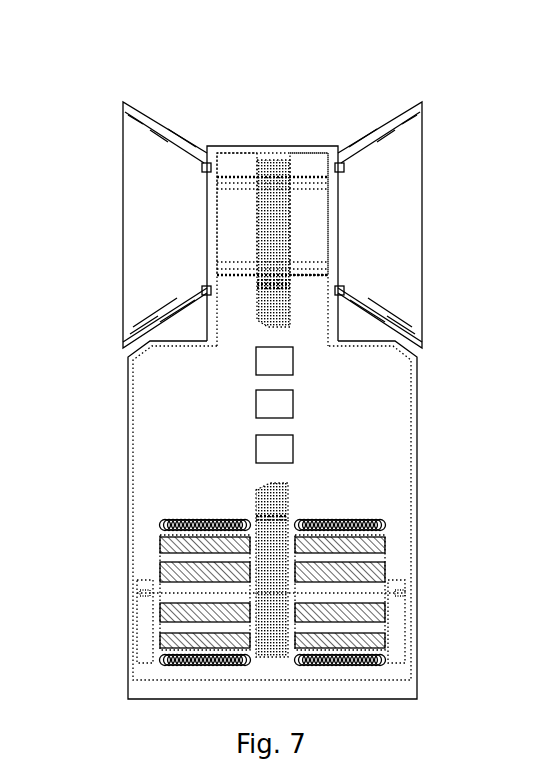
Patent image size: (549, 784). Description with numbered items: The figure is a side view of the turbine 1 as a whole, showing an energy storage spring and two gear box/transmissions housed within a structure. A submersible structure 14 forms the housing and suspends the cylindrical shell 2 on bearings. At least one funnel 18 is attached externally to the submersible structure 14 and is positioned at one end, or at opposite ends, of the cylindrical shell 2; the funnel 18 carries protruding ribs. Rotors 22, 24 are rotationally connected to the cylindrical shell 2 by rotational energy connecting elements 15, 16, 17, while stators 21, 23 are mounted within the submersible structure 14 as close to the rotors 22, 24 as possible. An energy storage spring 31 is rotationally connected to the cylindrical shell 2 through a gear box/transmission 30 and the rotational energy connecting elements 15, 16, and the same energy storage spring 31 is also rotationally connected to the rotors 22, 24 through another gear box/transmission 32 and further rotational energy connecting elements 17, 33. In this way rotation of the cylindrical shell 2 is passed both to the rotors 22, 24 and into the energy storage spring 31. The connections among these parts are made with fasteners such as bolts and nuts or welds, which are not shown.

The apparatus 1 is at (98, 82).
The cylindrical shell 2 is at (245, 235).
The submersible structure 14 is at (417, 383).
The rotational energy connecting element 15 is at (286, 225).
The rotational energy connecting element 16 is at (286, 321).
The rotational energy connecting element 17 is at (284, 575).
The funnel 18 is at (172, 195).
The stator 21 is at (158, 528).
The rotor 22 is at (213, 575).
The stator 23 is at (384, 528).
The rotor 24 is at (351, 575).
The gear box/transmission 30 is at (287, 371).
The energy storage spring 31 is at (287, 414).
The gear box/transmission 32 is at (287, 459).
The rotational energy connecting element 33 is at (284, 511).